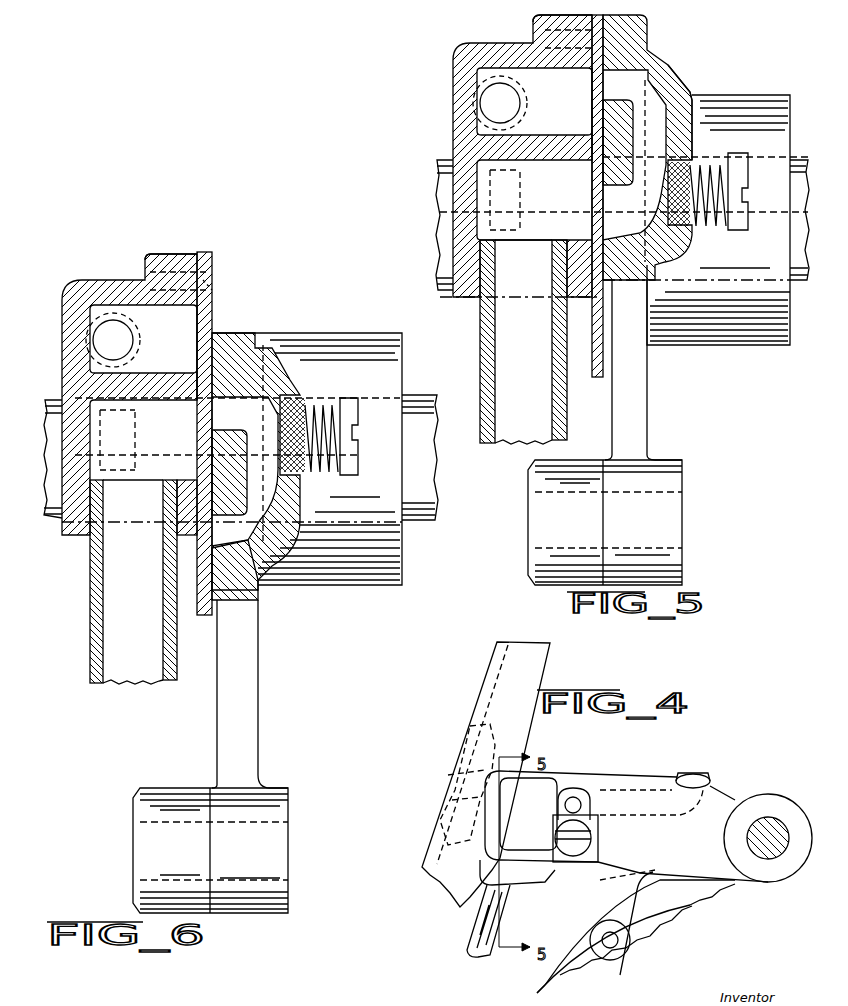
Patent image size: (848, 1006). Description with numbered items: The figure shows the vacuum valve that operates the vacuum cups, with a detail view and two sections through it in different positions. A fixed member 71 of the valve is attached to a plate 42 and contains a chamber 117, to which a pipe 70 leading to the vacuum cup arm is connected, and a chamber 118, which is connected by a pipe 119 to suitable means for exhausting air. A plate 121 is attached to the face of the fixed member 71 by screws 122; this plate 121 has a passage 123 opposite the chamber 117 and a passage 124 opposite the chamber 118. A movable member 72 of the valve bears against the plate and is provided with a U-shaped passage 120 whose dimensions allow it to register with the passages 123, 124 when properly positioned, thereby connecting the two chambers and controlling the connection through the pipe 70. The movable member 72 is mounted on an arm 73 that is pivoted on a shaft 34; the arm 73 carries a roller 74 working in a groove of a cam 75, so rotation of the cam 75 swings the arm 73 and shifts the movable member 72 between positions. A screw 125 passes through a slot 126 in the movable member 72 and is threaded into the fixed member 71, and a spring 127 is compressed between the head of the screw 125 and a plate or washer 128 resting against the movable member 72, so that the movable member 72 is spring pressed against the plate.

In FIG. 6, the shaft 34 is at (257, 457).
In FIG. 5, the shaft 34 is at (444, 226).
In FIG. 4, the plate 42 is at (535, 653).
In FIG. 6, the pipe 70 is at (137, 340).
In FIG. 5, the pipe 70 is at (523, 98).
In FIG. 4, the pipe 70 is at (705, 776).
In FIG. 6, the fixed member of vacuum valve 71 is at (80, 284).
In FIG. 5, the fixed member of vacuum valve 71 is at (453, 96).
In FIG. 4, the fixed member of vacuum valve 71 is at (478, 727).
In FIG. 6, the movable member of vacuum valve 72 is at (240, 345).
In FIG. 5, the movable member of vacuum valve 72 is at (643, 36).
In FIG. 4, the movable member of vacuum valve 72 is at (520, 790).
In FIG. 6, the arm 73 is at (258, 697).
In FIG. 5, the arm 73 is at (647, 402).
In FIG. 4, the arm 73 is at (642, 893).
In FIG. 6, the roller 74 is at (170, 788).
In FIG. 5, the roller 74 is at (547, 540).
In FIG. 4, the cam 75 is at (557, 958).
In FIG. 6, the chamber 117 is at (150, 312).
In FIG. 5, the chamber 117 is at (537, 118).
In FIG. 6, the chamber 118 is at (156, 473).
In FIG. 5, the chamber 118 is at (545, 236).
In FIG. 6, the pipe 119 is at (92, 596).
In FIG. 5, the pipe 119 is at (481, 338).
In FIG. 4, the pipe 119 is at (482, 934).
In FIG. 6, the U-shaped passage 120 is at (254, 594).
In FIG. 5, the U-shaped passage 120 is at (662, 103).
In FIG. 6, the plate 121 is at (212, 256).
In FIG. 5, the plate 121 is at (597, 378).
In FIG. 6, the screws 122 is at (204, 281).
In FIG. 5, the screws 122 is at (547, 33).
In FIG. 6, the passage 123 is at (208, 325).
In FIG. 5, the passage 123 is at (594, 88).
In FIG. 6, the passage 124 is at (206, 438).
In FIG. 5, the passage 124 is at (598, 189).
In FIG. 6, the screw 125 is at (352, 458).
In FIG. 5, the screw 125 is at (738, 183).
In FIG. 4, the screw 125 is at (598, 848).
In FIG. 4, the slot 126 is at (580, 803).
In FIG. 6, the spring 127 is at (324, 470).
In FIG. 5, the spring 127 is at (693, 161).
In FIG. 6, the plate or washer 128 is at (270, 362).
In FIG. 5, the plate or washer 128 is at (665, 255).